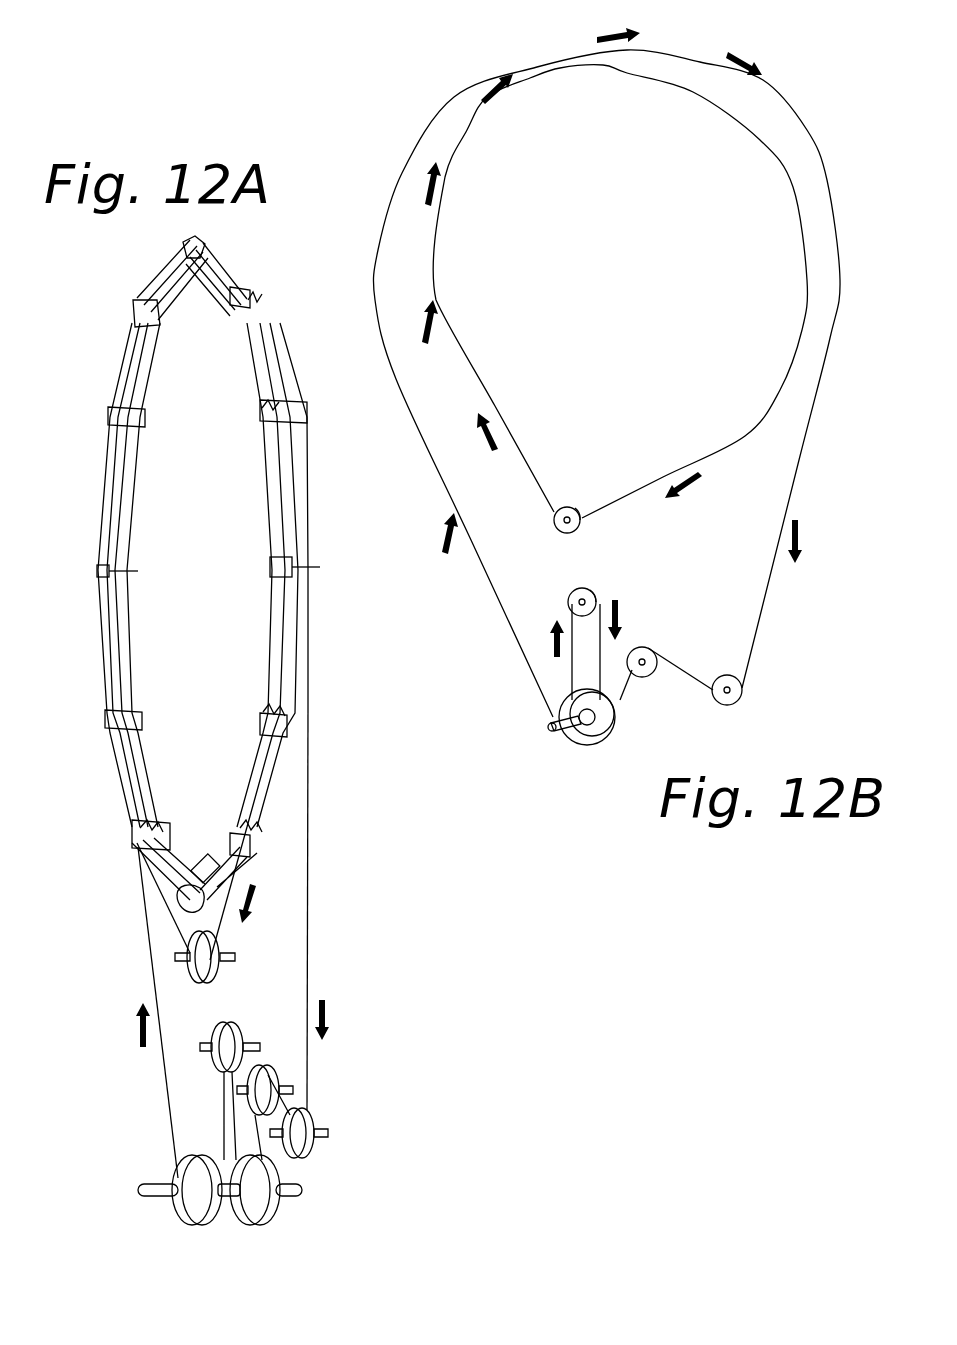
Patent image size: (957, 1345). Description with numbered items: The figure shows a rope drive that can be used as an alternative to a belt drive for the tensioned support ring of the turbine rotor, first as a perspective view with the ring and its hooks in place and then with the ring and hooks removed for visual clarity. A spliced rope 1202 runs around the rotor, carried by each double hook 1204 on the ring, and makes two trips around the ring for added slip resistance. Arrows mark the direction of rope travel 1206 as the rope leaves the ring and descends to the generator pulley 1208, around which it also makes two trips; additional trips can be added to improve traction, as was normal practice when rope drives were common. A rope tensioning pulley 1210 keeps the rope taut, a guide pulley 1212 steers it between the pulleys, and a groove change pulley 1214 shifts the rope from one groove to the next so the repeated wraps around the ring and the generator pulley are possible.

In FIG. 12A, the spliced rope 1202 is at (317, 817).
In FIG. 12B, the spliced rope 1202 is at (822, 365).
In FIG. 12A, the double hook 1204 is at (173, 333).
In FIG. 12A, the direction of rope travel 1206 is at (335, 1033).
In FIG. 12B, the direction of rope travel 1206 is at (800, 537).
In FIG. 12A, the generator pulley 1208 is at (172, 1172).
In FIG. 12B, the generator pulley 1208 is at (577, 742).
In FIG. 12A, the rope tensioning pulley 1210 is at (313, 1153).
In FIG. 12B, the rope tensioning pulley 1210 is at (740, 698).
In FIG. 12A, the guide pulley 1212 is at (275, 1065).
In FIG. 12B, the guide pulley 1212 is at (645, 647).
In FIG. 12A, the groove change pulley 1214 is at (220, 980).
In FIG. 12B, the groove change pulley 1214 is at (568, 507).